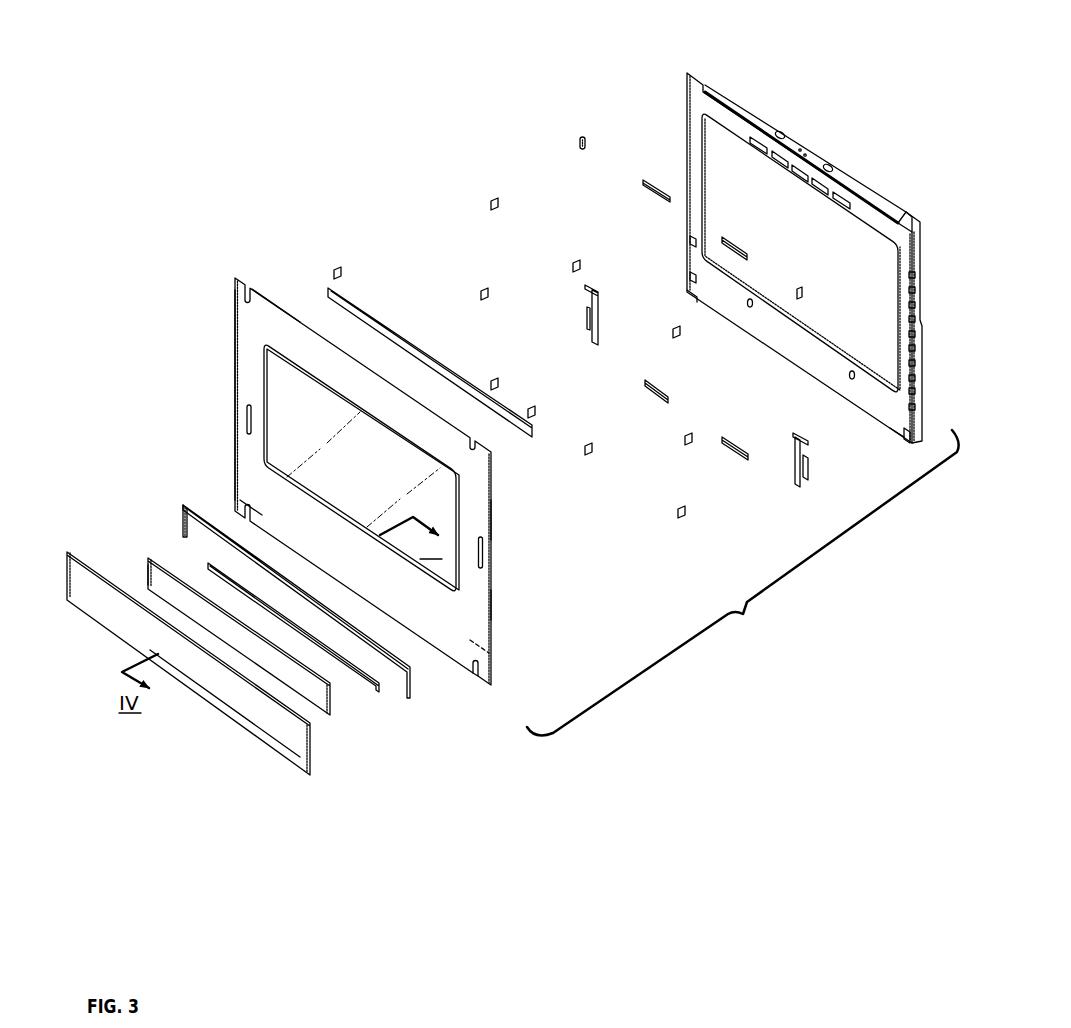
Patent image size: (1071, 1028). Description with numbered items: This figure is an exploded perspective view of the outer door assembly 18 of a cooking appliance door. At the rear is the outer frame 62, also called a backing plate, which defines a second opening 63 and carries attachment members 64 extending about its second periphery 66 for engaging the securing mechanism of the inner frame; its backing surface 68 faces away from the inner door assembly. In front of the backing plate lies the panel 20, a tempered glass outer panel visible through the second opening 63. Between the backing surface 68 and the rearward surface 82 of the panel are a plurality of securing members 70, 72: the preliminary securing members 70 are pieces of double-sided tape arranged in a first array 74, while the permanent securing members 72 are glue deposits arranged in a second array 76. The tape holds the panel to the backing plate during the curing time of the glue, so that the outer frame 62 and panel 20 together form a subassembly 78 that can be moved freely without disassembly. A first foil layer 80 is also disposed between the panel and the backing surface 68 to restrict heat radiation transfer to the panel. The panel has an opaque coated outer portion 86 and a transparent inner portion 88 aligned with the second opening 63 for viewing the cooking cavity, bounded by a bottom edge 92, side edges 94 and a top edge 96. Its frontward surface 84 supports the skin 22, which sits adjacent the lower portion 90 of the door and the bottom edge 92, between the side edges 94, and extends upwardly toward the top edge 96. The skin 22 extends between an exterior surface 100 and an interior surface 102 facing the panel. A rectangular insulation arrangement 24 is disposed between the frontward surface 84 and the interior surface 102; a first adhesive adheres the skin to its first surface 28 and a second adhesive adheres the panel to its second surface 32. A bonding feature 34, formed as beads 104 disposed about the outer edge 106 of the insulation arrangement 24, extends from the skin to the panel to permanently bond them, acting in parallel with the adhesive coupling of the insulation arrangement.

The outer door assembly 18 is at (318, 134).
The panel 20 is at (235, 278).
The skin 22 is at (311, 775).
The insulation arrangement 24 is at (333, 700).
The first surface 28 is at (160, 578).
The second surface 32 is at (163, 580).
The bonding feature 34 is at (183, 505).
The outer frame 62 is at (690, 72).
The second opening 63 is at (808, 270).
The attachment members 64 is at (728, 94).
The second periphery 66 is at (918, 223).
The backing surface 68 is at (893, 407).
The preliminary securing members 70 is at (492, 383).
The permanent securing members 72 is at (693, 257).
The first array 74 is at (460, 208).
The second array 76 is at (557, 145).
The subassembly 78 is at (743, 582).
The first foil layer 80 is at (327, 290).
The rearward surface 82 is at (460, 635).
The frontward surface 84 is at (253, 487).
The outer portion 86 is at (478, 528).
The transparent inner portion 88 is at (460, 588).
The lower portion 90 is at (356, 567).
The bottom edge 92 is at (472, 667).
The side edges 94 is at (235, 355).
The top edge 96 is at (277, 303).
The exterior surface 100 is at (275, 745).
The interior surface 102 is at (75, 585).
The beads 104 is at (381, 692).
The outer edge 106 is at (410, 698).